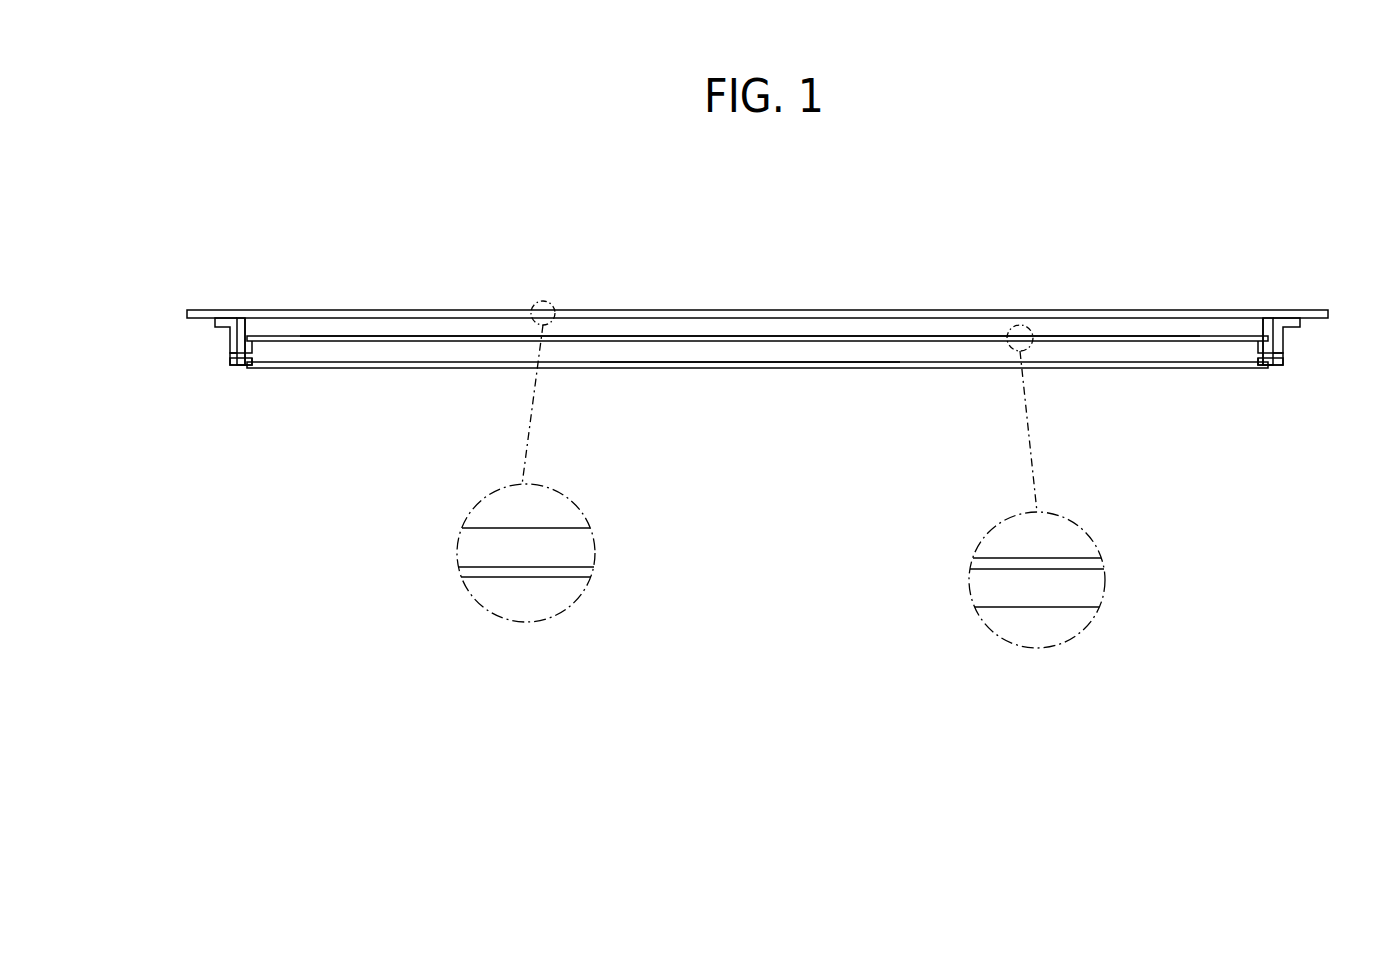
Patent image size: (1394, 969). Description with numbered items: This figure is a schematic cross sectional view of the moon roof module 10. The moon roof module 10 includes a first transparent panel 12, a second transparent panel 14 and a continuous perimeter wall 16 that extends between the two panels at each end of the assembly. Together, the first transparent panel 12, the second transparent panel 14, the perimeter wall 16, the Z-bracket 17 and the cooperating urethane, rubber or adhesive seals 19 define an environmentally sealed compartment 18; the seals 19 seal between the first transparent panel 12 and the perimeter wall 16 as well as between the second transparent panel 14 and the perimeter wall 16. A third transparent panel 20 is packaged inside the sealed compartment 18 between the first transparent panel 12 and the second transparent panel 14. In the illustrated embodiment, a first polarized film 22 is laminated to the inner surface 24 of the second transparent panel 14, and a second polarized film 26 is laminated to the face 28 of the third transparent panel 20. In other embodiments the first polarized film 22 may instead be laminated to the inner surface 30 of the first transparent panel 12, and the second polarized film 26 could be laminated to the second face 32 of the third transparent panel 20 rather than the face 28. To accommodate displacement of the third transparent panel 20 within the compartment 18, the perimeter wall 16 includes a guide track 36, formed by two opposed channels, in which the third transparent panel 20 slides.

The moon roof module 10 is at (1088, 203).
The first transparent panel 12 is at (1122, 366).
The second transparent panel 14 is at (358, 311).
The perimeter wall 16 is at (243, 320).
The Z-bracket 17 is at (230, 340).
The sealed compartment 18 is at (457, 330).
The seals 19 is at (226, 320).
The third transparent panel 20 is at (602, 338).
The first polarized film 22 is at (547, 573).
The inner surface 24 is at (510, 568).
The second polarized film 26 is at (1030, 562).
The face 28 is at (1055, 568).
The inner surface 30 is at (722, 362).
The second face 32 is at (1065, 607).
The guide track 36 is at (246, 365).